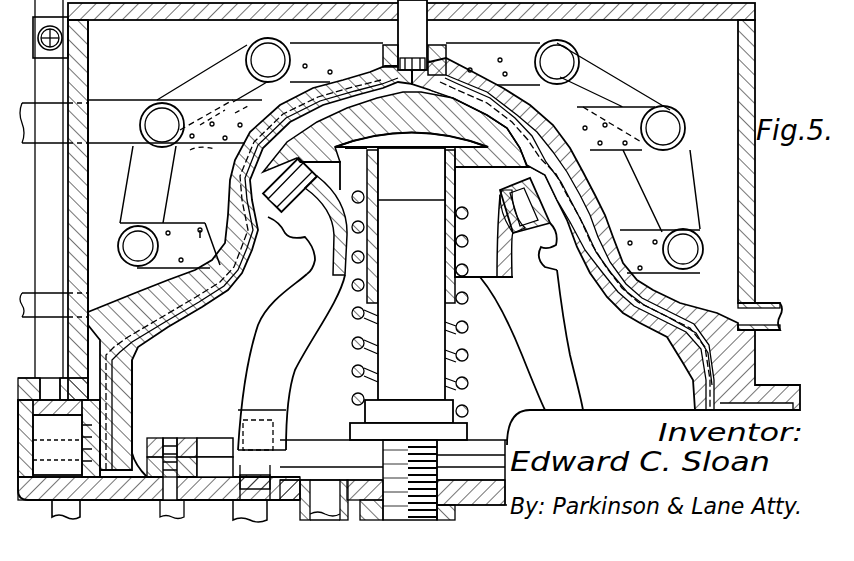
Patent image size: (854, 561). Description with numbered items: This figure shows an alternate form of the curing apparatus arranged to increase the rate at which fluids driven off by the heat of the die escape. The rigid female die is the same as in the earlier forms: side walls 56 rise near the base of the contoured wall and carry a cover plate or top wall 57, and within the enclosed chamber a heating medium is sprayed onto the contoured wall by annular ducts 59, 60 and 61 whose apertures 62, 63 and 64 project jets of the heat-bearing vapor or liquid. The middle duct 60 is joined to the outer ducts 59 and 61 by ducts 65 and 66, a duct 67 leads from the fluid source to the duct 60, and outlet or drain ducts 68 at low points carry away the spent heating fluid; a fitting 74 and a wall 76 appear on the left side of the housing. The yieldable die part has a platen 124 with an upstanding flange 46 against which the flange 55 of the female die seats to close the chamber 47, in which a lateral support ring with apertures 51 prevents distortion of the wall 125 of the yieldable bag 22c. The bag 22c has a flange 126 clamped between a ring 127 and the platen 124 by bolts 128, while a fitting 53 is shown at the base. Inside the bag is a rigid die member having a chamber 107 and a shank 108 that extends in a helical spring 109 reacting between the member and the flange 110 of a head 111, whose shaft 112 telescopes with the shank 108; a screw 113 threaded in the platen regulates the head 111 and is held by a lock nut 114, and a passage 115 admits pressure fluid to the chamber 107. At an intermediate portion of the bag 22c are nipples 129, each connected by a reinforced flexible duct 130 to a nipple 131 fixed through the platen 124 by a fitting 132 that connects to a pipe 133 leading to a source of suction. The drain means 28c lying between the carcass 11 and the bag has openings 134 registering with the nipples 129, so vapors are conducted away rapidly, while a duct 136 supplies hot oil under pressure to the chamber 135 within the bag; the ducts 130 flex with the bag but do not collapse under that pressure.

The carcass 11 is at (588, 184).
The yieldable die part or bag 22c is at (197, 323).
The drain means 28c is at (578, 206).
The upstanding flange 46 is at (59, 427).
The chamber 47 is at (80, 442).
The apertures 51 is at (82, 463).
The fitting 53 is at (52, 508).
The flange of the female die 55 is at (30, 362).
The side walls 56 is at (78, 178).
The cover plate or top wall 57 is at (722, 24).
The annular duct 59 is at (250, 48).
The annular duct 60 is at (141, 123).
The annular duct 61 is at (118, 258).
The apertures 62 is at (318, 72).
The apertures 63 is at (193, 147).
The apertures 64 is at (182, 258).
The duct 65 is at (196, 86).
The duct 66 is at (160, 192).
The duct 67 is at (102, 112).
The outlet or drain ducts 68 is at (85, 318).
The pipe fitting 74 is at (75, 40).
The side wall 76 is at (50, 193).
The chamber 107 is at (421, 145).
The shank 108 is at (442, 250).
The helical spring 109 is at (498, 194).
The flange 110 is at (350, 432).
The head 111 is at (380, 411).
The shaft 112 is at (404, 372).
The screw 113 is at (383, 452).
The lock nut 114 is at (460, 496).
The passage 115 is at (305, 180).
The platen 124 is at (215, 467).
The wall 125 is at (130, 416).
The flange 126 is at (95, 508).
The ring 127 is at (208, 428).
The bolts 128 is at (170, 440).
The nipples 129 is at (275, 254).
The flexible duct 130 is at (286, 356).
The nipple 131 is at (215, 448).
The fitting 132 is at (262, 475).
The duct or pipe 133 is at (233, 509).
The openings 134 is at (553, 258).
The chamber 135 is at (500, 392).
The duct 136 is at (345, 478).